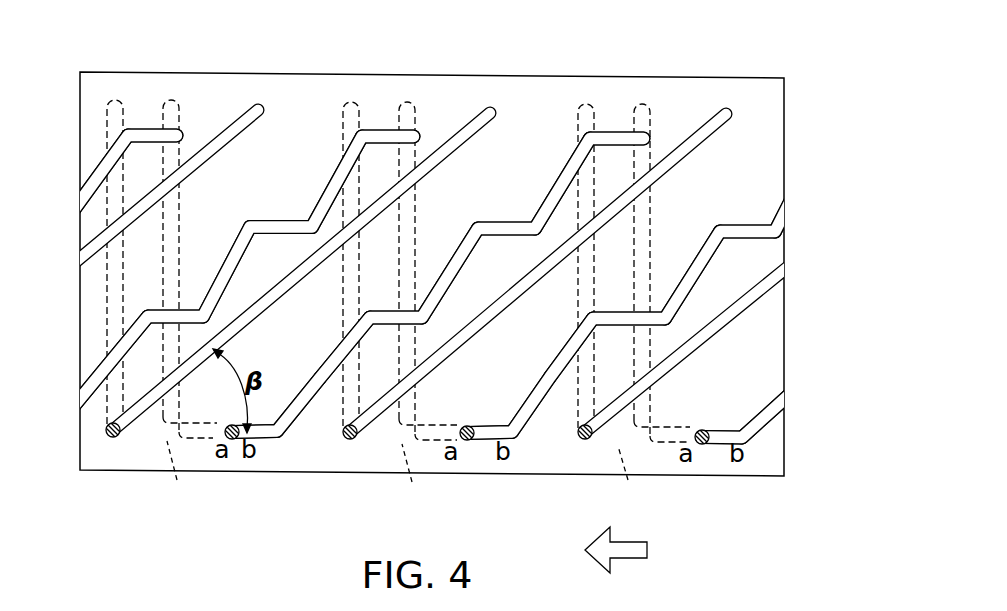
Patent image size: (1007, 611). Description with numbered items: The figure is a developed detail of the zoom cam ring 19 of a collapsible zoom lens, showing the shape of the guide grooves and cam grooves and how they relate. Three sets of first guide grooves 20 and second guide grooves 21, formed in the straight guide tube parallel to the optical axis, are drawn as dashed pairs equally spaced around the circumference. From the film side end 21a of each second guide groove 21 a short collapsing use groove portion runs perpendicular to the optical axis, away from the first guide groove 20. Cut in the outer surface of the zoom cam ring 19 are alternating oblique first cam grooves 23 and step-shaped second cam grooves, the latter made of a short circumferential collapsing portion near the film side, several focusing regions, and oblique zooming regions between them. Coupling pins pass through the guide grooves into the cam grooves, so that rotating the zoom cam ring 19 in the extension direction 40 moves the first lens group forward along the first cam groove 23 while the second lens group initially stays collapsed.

The zoom cam ring 19 is at (227, 72).
The first guide groove 20 is at (118, 100).
The second guide groove 21 is at (174, 100).
The film side end 21a is at (393, 475).
The first cam groove 23 is at (259, 113).
The extension direction 40 is at (636, 550).